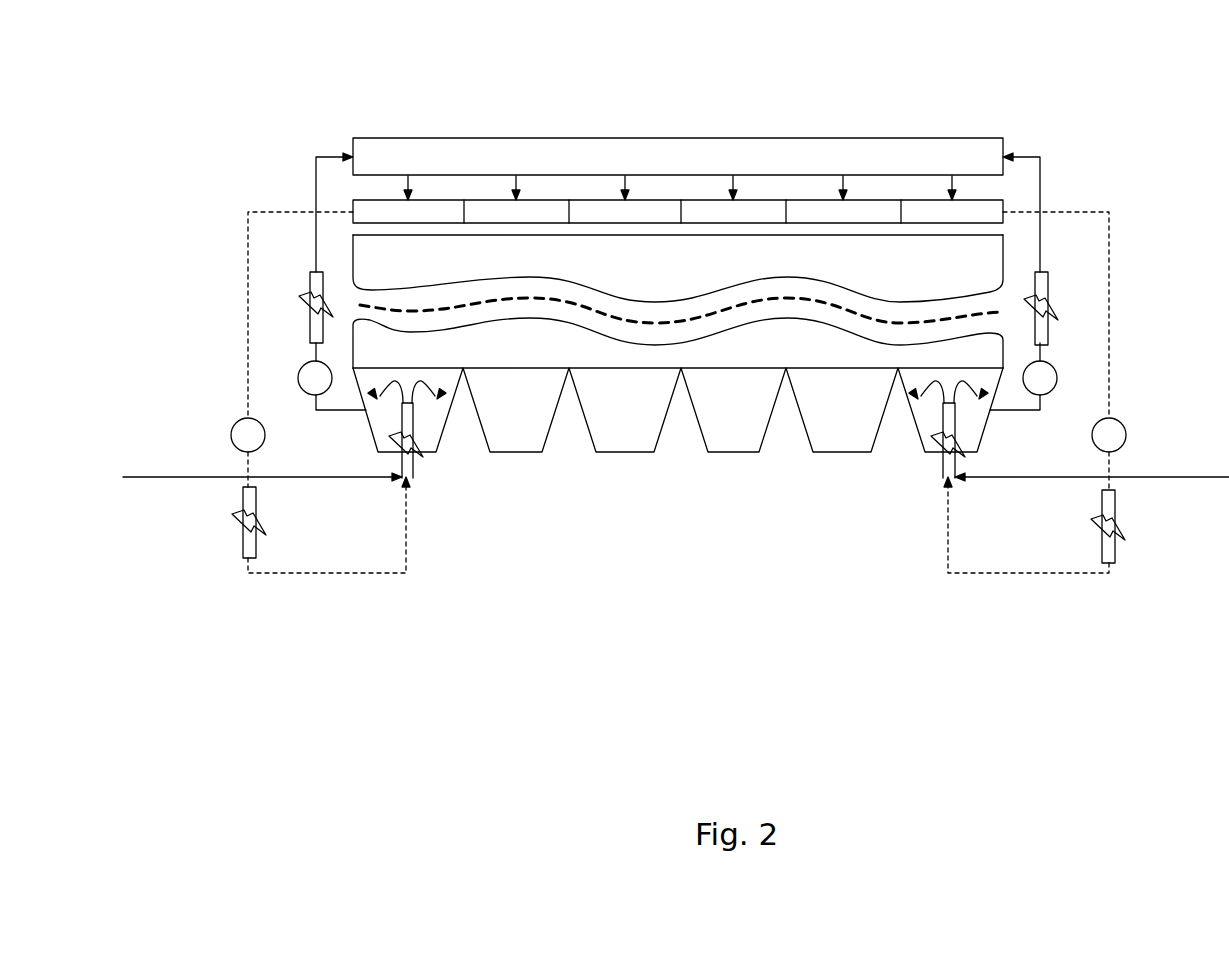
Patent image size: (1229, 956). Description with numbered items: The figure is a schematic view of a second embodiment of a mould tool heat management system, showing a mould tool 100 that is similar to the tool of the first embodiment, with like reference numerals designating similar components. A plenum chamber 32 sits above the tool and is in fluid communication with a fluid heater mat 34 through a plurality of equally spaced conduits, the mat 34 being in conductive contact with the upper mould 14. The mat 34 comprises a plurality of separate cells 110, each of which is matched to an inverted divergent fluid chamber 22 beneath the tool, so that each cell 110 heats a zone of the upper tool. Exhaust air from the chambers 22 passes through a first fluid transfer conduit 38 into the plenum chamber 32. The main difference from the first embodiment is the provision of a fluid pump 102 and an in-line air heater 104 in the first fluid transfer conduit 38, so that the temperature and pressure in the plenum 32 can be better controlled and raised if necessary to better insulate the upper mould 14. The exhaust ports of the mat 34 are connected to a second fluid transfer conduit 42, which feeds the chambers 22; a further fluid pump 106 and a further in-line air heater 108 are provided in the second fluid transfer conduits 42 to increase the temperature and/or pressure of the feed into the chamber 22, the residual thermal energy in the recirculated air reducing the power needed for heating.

The mould tool 100 is at (162, 328).
The first fluid transfer conduit 38 is at (315, 185).
The cell 110 is at (430, 208).
The fluid heater mat 34 is at (698, 200).
The plenum chamber 32 is at (678, 169).
The upper mould 14 is at (678, 301).
The in-line air heater 104 is at (313, 288).
The fluid pump 102 is at (308, 380).
The second fluid transfer conduit 42 is at (1109, 237).
The further fluid pump 106 is at (1109, 435).
The inverted divergent fluid chamber 22 is at (447, 422).
The further in-line air heater 108 is at (1109, 505).